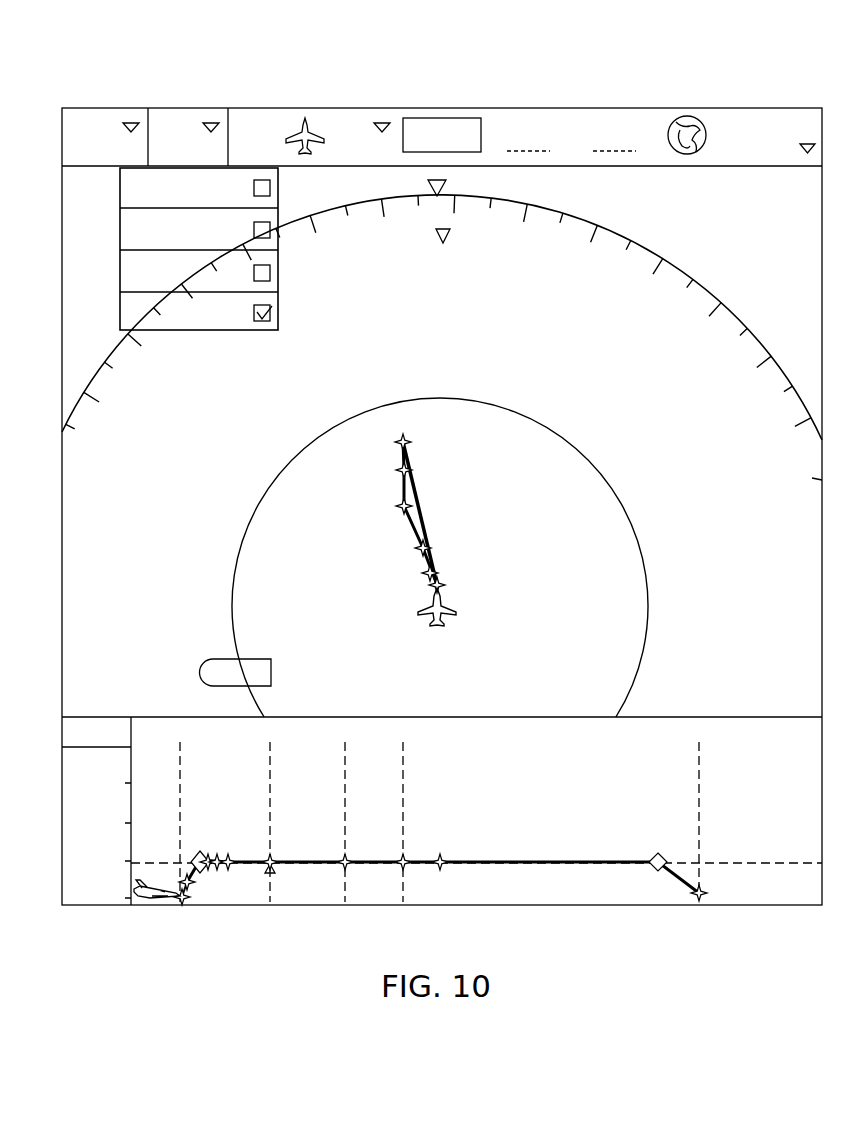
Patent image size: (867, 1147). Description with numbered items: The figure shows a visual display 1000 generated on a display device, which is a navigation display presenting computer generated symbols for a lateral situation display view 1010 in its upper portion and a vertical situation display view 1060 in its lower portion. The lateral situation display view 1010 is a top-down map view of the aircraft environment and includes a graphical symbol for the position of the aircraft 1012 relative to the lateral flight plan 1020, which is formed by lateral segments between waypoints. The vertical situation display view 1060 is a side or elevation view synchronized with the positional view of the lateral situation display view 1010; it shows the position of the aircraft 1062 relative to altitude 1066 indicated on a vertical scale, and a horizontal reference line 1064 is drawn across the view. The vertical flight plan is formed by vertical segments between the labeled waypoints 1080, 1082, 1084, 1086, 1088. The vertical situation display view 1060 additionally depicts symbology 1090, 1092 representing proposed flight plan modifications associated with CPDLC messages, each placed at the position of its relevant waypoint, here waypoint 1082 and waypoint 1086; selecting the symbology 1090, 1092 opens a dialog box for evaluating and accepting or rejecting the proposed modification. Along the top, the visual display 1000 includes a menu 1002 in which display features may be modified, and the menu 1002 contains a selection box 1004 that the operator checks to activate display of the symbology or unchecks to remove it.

The visual display 1000 is at (129, 78).
The menu 1002 is at (185, 107).
The selection box 1004 is at (120, 270).
The lateral situation display view 1010 is at (76, 510).
The aircraft 1012 is at (432, 628).
The lateral flight plan 1020 is at (404, 515).
The vertical situation display view 1060 is at (62, 758).
The aircraft 1062 is at (160, 906).
The selected altitude reference line 1064 is at (62, 858).
The altitude 1066 is at (240, 906).
The waypoint 1080 is at (180, 803).
The waypoint 1082 is at (270, 762).
The waypoint 1084 is at (345, 800).
The waypoint 1086 is at (403, 762).
The waypoint 1088 is at (699, 805).
The symbology 1090 is at (300, 804).
The symbology 1092 is at (475, 792).